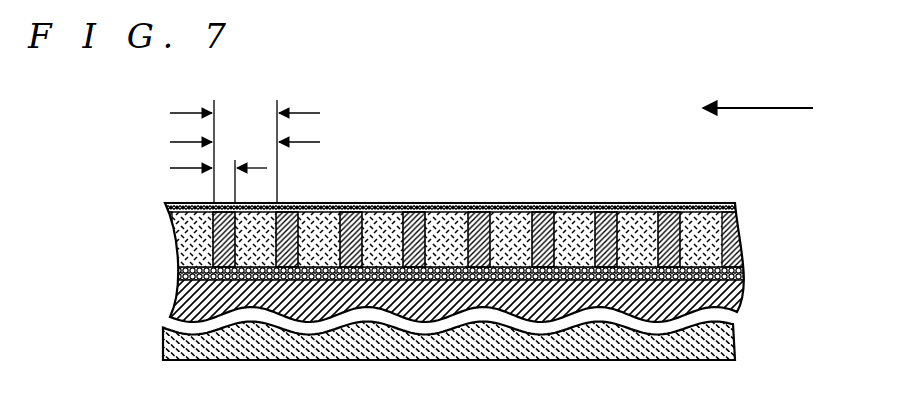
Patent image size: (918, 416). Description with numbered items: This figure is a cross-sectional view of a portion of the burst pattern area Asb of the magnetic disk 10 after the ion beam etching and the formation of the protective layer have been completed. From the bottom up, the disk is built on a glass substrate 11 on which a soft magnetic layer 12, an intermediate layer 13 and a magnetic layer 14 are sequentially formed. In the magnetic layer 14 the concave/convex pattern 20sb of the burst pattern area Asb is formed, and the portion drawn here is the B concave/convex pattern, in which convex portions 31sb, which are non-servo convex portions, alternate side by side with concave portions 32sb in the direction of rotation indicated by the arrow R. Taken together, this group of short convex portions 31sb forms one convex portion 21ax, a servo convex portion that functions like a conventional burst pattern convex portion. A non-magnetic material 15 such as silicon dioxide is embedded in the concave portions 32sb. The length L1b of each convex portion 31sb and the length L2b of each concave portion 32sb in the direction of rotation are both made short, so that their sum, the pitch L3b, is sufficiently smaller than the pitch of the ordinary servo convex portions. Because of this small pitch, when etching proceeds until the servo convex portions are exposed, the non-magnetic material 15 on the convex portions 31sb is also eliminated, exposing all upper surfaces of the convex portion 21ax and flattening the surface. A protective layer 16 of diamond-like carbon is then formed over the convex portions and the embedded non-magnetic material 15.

The magnetic disk 10 is at (480, 101).
The glass substrate 11 is at (730, 343).
The soft magnetic layer 12 is at (745, 297).
The intermediate layer 13 is at (745, 274).
The magnetic layer 14 is at (693, 243).
The non-magnetic material 15 is at (732, 232).
The protective layer 16 is at (737, 205).
The convex portion 21ax is at (468, 175).
The convex portion 31sb is at (485, 203).
The concave portion 32sb is at (442, 203).
The burst pattern area Asb is at (665, 175).
The concave/convex pattern 20sb is at (488, 224).
The direction of rotation R is at (769, 109).
The length of convex portion 31sb L1b is at (196, 181).
The length of concave portion 32sb L2b is at (222, 145).
The pitch of convex portions 31sb L3b is at (245, 151).